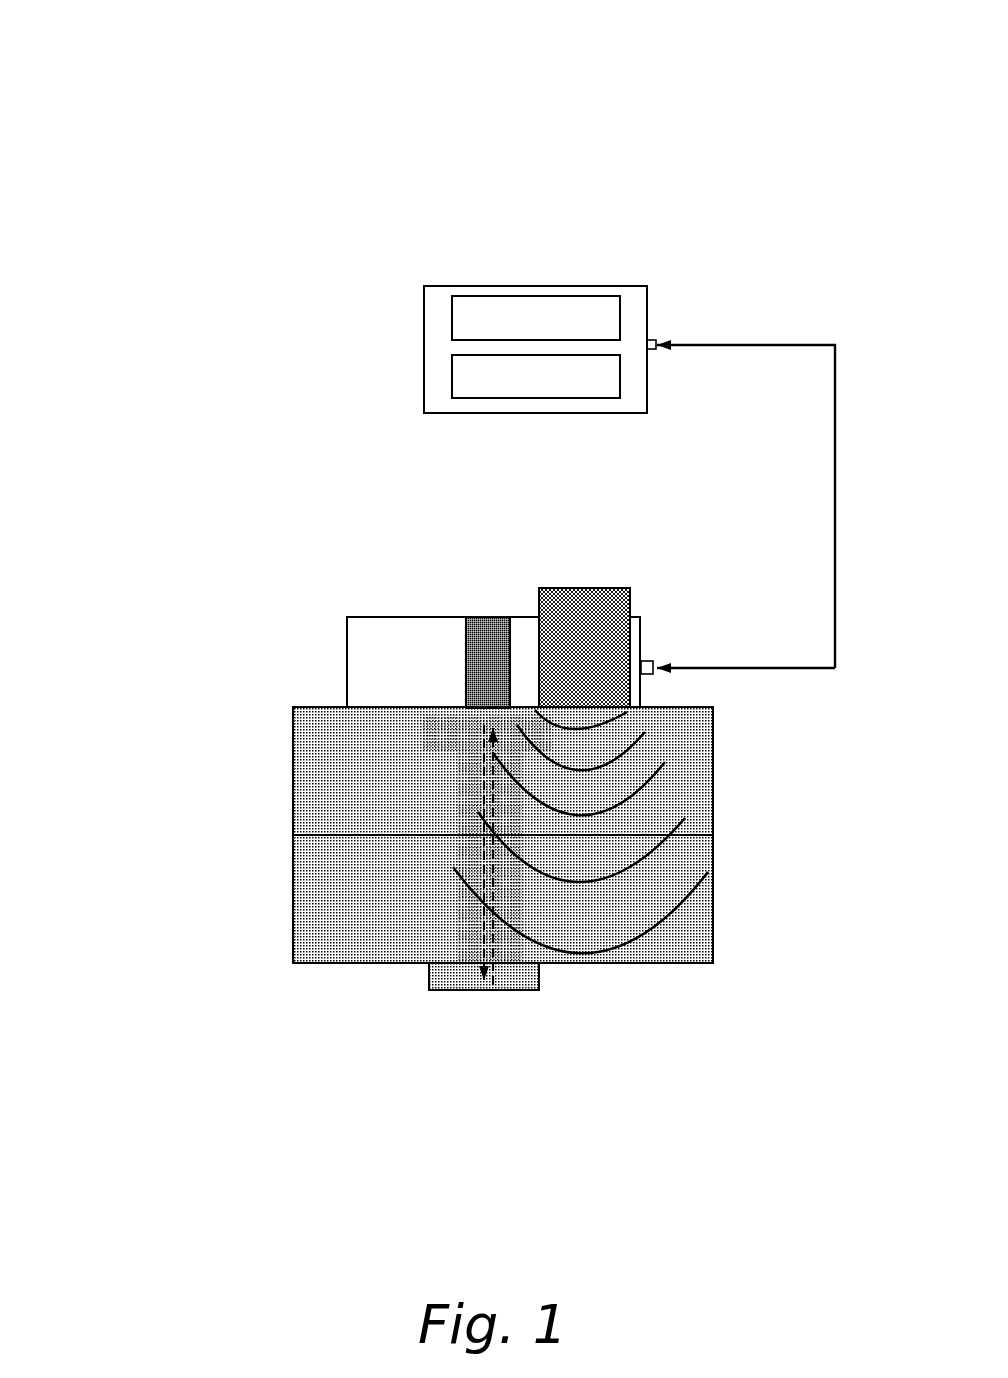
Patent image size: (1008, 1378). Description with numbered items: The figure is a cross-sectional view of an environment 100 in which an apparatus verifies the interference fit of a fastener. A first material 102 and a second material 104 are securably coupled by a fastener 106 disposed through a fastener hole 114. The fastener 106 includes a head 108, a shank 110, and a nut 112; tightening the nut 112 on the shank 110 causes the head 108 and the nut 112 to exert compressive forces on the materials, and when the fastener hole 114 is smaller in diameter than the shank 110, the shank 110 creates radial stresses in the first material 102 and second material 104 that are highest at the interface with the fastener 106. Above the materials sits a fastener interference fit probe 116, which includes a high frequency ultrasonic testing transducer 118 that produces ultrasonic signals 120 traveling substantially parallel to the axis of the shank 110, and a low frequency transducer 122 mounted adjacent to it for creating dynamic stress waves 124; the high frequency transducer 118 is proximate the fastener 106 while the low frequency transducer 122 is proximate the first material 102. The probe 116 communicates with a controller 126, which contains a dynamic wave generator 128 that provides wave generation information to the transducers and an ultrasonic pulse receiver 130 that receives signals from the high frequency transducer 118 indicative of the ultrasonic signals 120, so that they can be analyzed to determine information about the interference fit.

The environment 100 is at (170, 88).
The first material 102 is at (713, 807).
The second material 104 is at (713, 897).
The fastener 106 is at (450, 785).
The head 108 is at (447, 735).
The shank 110 is at (465, 825).
The nut 112 is at (539, 990).
The fastener hole 114 is at (458, 927).
The fastener interference fit probe 116 is at (347, 617).
The high frequency ultrasonic testing transducer 118 is at (487, 617).
The ultrasonic signals 120 is at (483, 993).
The low frequency transducer 122 is at (587, 588).
The dynamic stress waves 124 is at (672, 770).
The controller 126 is at (442, 286).
The dynamic wave generator 128 is at (452, 320).
The ultrasonic pulse receiver 130 is at (452, 377).